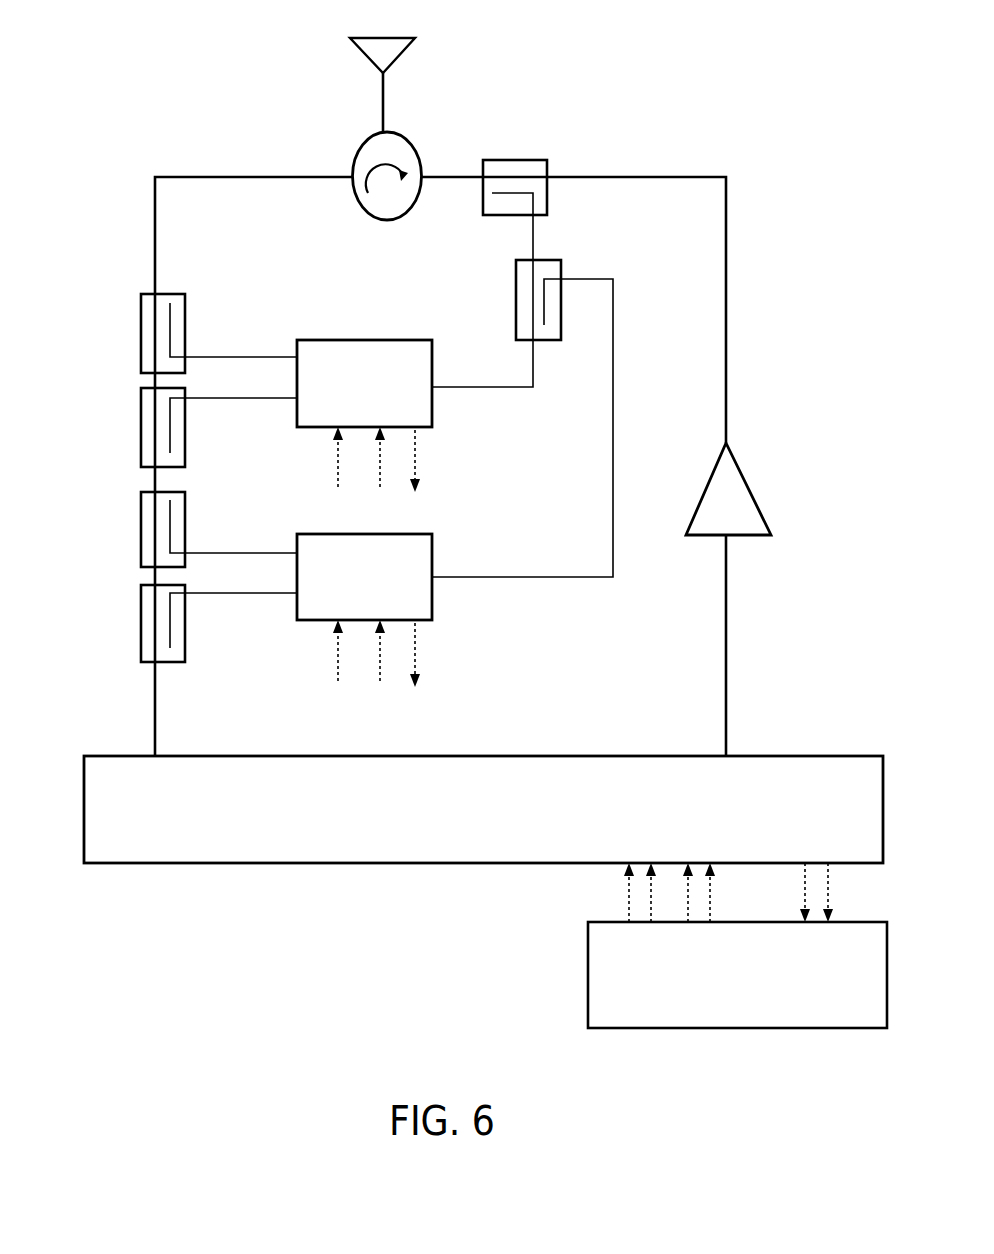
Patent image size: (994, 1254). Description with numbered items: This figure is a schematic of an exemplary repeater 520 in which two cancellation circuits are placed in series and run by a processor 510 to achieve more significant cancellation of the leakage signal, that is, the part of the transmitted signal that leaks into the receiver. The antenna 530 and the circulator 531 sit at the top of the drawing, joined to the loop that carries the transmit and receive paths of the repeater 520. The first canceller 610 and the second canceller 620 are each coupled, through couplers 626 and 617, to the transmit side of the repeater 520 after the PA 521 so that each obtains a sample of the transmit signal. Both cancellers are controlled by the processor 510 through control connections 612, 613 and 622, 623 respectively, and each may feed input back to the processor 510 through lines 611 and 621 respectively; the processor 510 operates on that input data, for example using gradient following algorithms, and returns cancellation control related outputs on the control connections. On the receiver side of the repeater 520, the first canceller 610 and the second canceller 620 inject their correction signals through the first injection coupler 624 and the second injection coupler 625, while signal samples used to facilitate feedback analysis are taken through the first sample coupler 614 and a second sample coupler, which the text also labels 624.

The processor 510 is at (588, 993).
The repeater 520 is at (176, 864).
The PA 521 is at (757, 493).
The antenna 530 is at (415, 44).
The circulator 531 is at (352, 156).
The canceller 1 610 is at (432, 403).
The line 611 is at (418, 464).
The control connection 612 is at (378, 470).
The control connection 613 is at (335, 462).
The sample coupler 1 614 is at (185, 454).
The coupler 617 is at (561, 263).
The canceller 2 620 is at (432, 597).
The line 621 is at (418, 659).
The control connection 622 is at (378, 664).
The control connection 623 is at (335, 656).
The injection coupler 1 624 is at (185, 304).
The injection coupler 2 625 is at (185, 531).
The coupler 626 is at (547, 162).